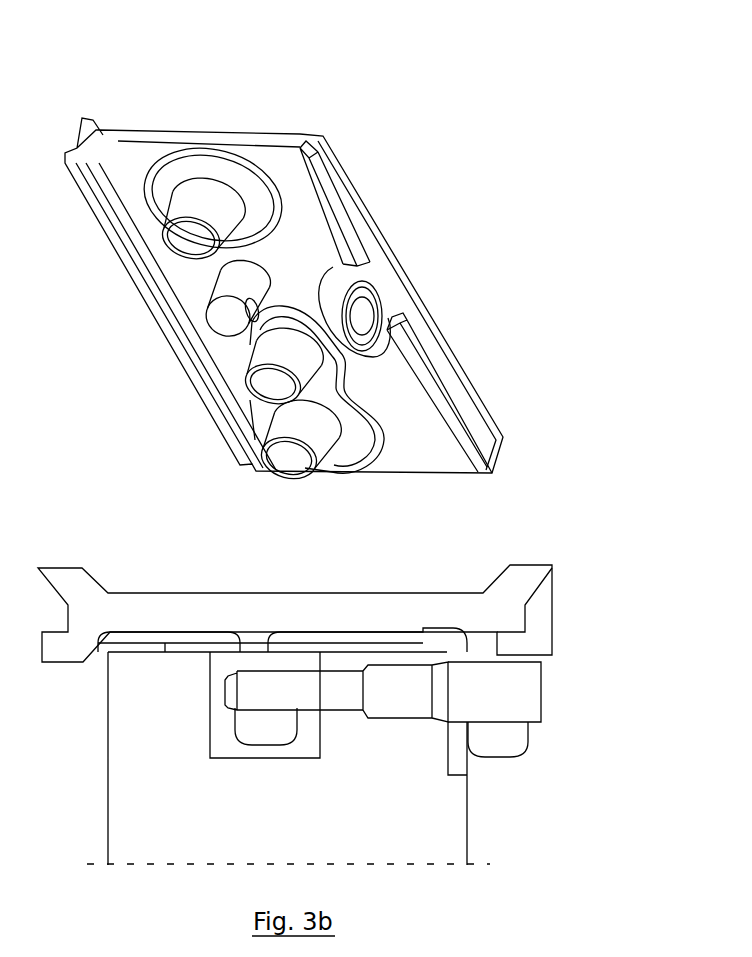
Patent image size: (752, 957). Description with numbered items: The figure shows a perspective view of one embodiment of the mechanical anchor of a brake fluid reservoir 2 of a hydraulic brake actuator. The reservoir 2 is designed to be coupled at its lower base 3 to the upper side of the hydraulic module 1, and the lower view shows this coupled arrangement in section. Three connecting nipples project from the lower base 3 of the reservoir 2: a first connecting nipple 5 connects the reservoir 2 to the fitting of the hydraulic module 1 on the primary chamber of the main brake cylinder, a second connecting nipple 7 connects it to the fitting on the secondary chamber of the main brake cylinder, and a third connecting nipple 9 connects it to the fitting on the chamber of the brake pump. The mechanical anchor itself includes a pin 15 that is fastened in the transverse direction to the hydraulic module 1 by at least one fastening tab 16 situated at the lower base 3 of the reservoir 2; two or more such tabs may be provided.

The hydraulic module 1 is at (491, 826).
The brake fluid reservoir 2 is at (337, 419).
The lower base 3 is at (427, 438).
The first connecting nipple 5 is at (288, 360).
The second connecting nipple 7 is at (205, 212).
The third connecting nipple 9 is at (303, 437).
The pin 15 is at (505, 690).
The fastening tab 16 is at (380, 296).